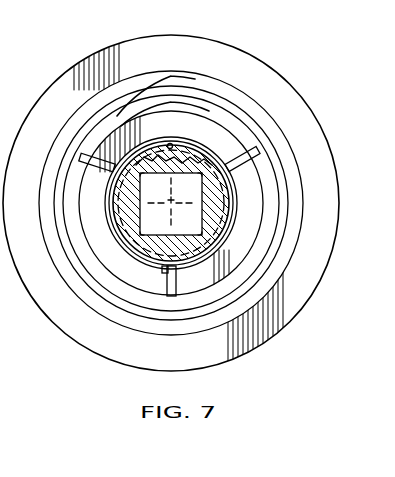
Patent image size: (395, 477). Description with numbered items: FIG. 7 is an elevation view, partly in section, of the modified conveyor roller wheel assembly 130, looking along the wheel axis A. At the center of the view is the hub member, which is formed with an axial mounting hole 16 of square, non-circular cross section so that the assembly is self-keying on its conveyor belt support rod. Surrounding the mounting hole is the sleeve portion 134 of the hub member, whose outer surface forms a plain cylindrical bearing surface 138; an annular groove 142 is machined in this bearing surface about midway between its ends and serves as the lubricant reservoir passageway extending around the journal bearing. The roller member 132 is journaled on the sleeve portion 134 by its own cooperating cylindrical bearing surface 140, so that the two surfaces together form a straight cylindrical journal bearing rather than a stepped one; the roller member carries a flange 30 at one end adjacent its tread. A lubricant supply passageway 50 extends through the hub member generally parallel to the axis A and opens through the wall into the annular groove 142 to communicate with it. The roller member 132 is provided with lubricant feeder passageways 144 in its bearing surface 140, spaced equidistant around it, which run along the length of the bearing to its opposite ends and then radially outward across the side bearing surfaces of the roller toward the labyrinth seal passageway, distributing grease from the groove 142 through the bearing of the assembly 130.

The flange 30 is at (145, 42).
The conveyor roller wheel assembly 130 is at (60, 64).
The roller member 132 is at (285, 82).
The sleeve portion 134 is at (185, 263).
The cylindrical bearing surface 138 is at (210, 246).
The cylindrical bearing surface 140 is at (218, 237).
The annular groove 142 is at (190, 153).
The lubricant feeder passageways 144 is at (113, 172).
The lubrication passageway 50 is at (170, 146).
The mounting hole 16 is at (143, 216).
The hub axis A is at (170, 200).